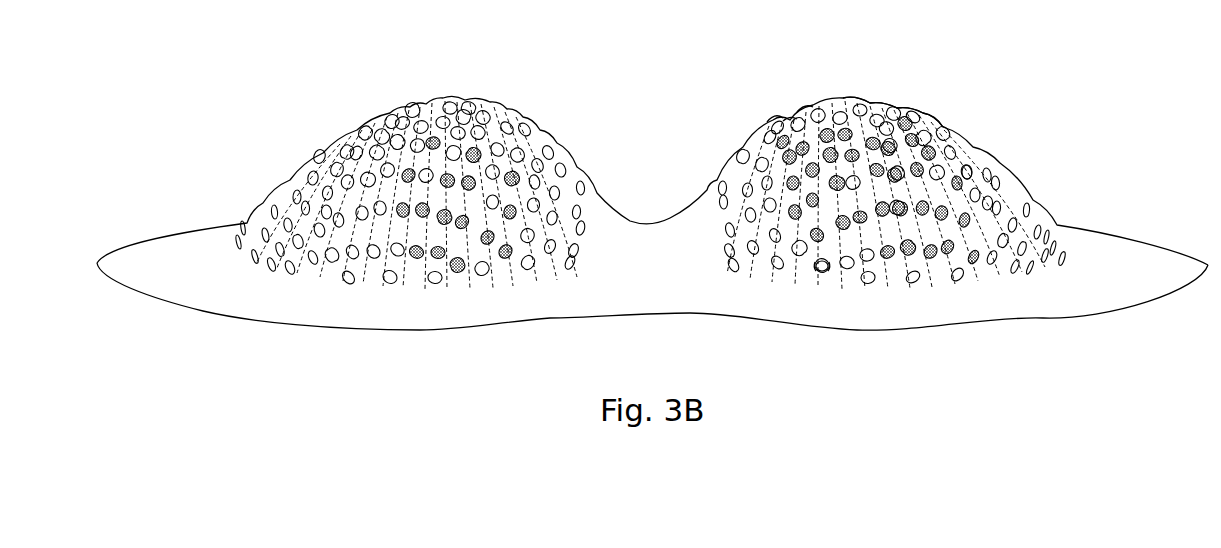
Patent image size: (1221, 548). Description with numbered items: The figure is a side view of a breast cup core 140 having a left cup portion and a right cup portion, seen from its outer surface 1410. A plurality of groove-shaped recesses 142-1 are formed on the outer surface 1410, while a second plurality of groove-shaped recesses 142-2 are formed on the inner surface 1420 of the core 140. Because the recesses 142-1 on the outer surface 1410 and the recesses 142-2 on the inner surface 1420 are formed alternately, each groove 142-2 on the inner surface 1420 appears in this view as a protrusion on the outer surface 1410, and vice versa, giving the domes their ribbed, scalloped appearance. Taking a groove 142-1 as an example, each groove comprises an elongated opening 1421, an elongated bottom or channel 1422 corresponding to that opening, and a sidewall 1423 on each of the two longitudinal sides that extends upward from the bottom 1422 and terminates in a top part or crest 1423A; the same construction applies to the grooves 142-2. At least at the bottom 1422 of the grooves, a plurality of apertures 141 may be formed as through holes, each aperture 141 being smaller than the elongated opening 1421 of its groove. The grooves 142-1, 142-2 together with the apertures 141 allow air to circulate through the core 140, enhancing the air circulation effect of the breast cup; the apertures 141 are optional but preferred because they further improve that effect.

The breast cup core 140 is at (1022, 157).
The aperture 141 is at (968, 166).
The outer surface 1410 is at (180, 260).
The inner surface 1420 is at (203, 312).
The elongated opening 1421 is at (790, 118).
The elongated bottom 1422 is at (823, 280).
The sidewall 1423 is at (832, 272).
The crest 1423A is at (805, 107).
The groove-shaped recess on outer surface 142-1 is at (1005, 280).
The groove-shaped recess on inner surface 142-2 is at (933, 116).